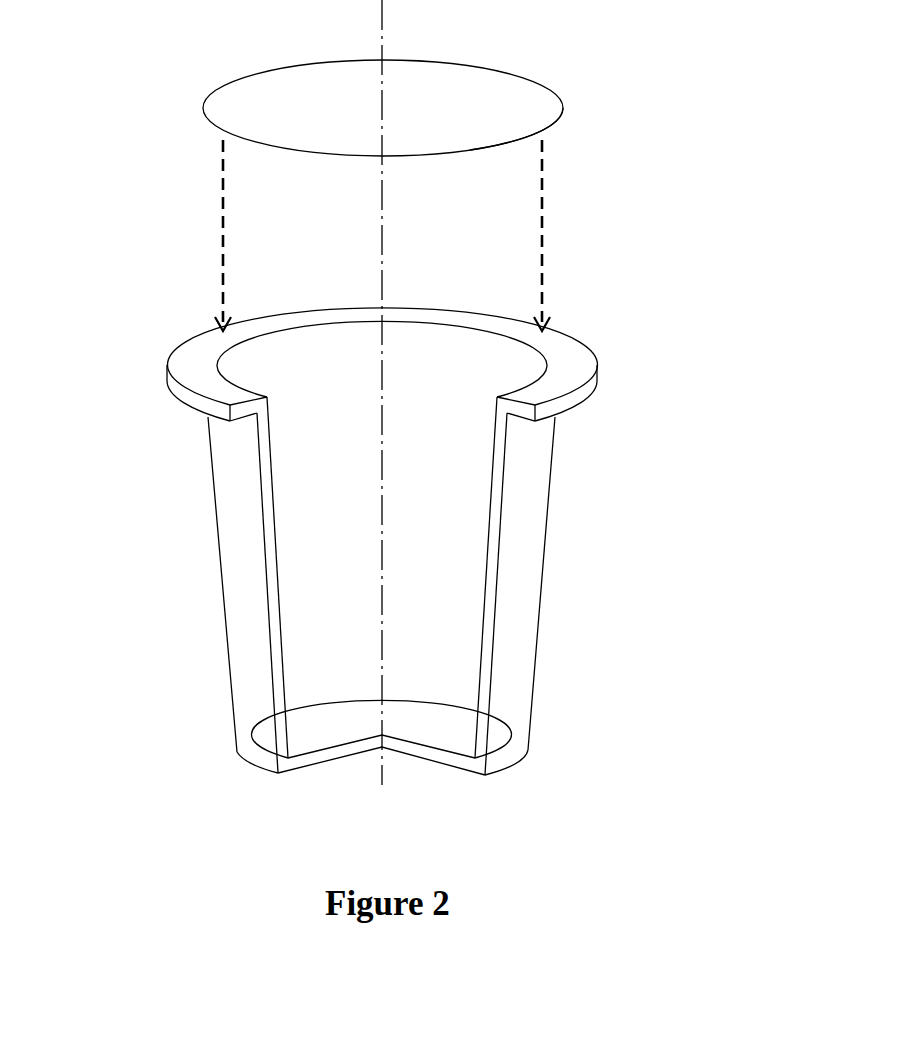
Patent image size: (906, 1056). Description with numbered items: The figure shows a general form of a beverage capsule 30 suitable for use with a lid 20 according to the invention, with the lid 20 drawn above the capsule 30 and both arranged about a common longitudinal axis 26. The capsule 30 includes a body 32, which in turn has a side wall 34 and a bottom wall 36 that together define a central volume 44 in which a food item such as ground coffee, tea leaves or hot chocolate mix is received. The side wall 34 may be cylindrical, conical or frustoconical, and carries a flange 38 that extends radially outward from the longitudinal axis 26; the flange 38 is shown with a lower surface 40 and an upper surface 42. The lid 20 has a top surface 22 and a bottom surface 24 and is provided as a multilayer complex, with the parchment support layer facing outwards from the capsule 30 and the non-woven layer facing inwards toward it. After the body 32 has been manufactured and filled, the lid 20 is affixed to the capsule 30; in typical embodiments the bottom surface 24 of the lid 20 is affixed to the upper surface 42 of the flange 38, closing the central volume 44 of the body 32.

The lid 20 is at (140, 102).
The top surface 22 is at (522, 93).
The bottom surface 24 is at (550, 130).
The longitudinal axis 26 is at (382, 238).
The capsule 30 is at (595, 562).
The body 32 is at (255, 689).
The side wall 34 is at (229, 592).
The bottom wall 36 is at (319, 762).
The flange 38 is at (179, 392).
The lower surface 40 is at (575, 405).
The upper surface 42 is at (560, 345).
The central volume 44 is at (440, 573).